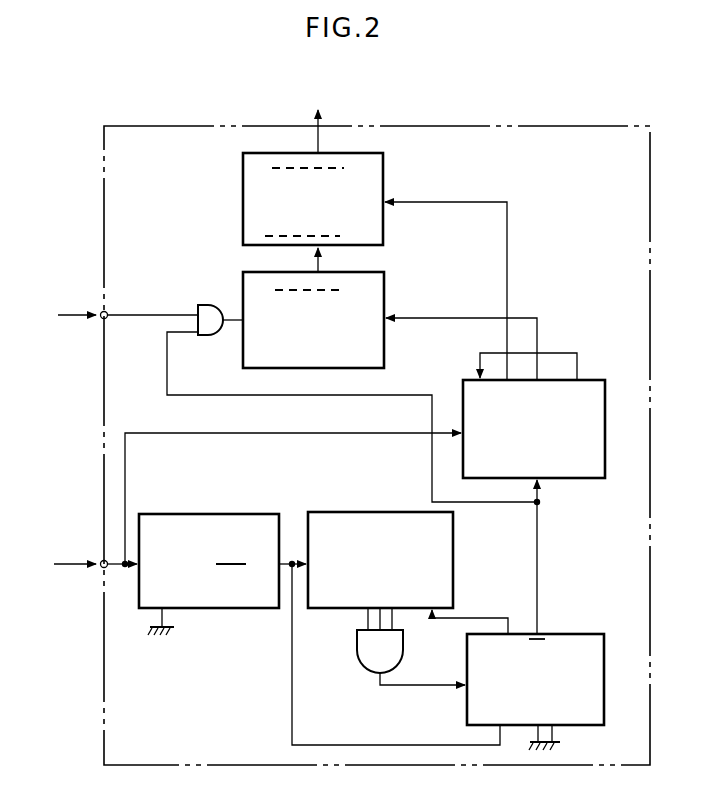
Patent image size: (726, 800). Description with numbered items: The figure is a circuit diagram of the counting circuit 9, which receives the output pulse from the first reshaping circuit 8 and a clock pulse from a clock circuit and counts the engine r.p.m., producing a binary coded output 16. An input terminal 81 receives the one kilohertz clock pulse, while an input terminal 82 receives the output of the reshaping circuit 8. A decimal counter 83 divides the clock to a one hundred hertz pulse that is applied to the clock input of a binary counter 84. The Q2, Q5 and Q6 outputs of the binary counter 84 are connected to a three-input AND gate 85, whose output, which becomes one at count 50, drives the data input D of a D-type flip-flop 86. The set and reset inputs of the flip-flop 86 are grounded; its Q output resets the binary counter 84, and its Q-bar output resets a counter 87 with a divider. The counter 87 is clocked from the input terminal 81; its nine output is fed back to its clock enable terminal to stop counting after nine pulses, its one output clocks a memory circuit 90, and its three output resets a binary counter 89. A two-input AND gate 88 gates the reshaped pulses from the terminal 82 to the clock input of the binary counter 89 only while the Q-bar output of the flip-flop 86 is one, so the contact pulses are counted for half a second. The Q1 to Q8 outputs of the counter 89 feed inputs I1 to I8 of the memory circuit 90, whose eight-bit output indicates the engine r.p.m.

The counting circuit 9 is at (650, 234).
The output 16 is at (321, 114).
The first reshaping circuit 8 is at (66, 316).
The input terminal 82 is at (107, 318).
The input terminal 81 is at (106, 568).
The decimal counter 83 is at (228, 608).
The binary counter 84 is at (388, 512).
The AND gate 50 is at (380, 651).
The 3-input AND gate 85 is at (362, 668).
The D-type flip-flop 86 is at (604, 688).
The counter with a divider 87 is at (605, 433).
The two-input AND gate 88 is at (212, 305).
The binary counter 89 is at (384, 281).
The memory circuit 90 is at (383, 190).